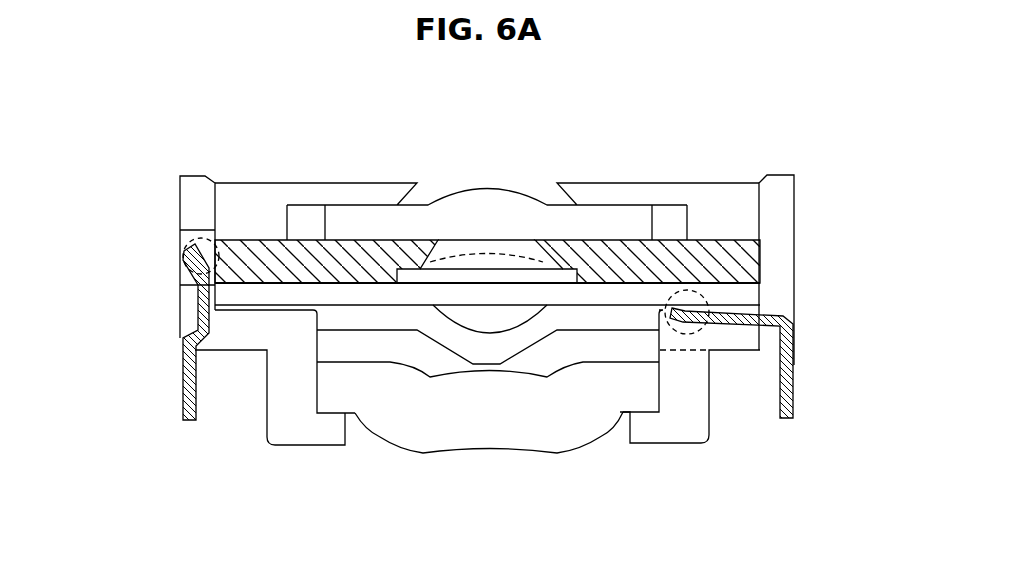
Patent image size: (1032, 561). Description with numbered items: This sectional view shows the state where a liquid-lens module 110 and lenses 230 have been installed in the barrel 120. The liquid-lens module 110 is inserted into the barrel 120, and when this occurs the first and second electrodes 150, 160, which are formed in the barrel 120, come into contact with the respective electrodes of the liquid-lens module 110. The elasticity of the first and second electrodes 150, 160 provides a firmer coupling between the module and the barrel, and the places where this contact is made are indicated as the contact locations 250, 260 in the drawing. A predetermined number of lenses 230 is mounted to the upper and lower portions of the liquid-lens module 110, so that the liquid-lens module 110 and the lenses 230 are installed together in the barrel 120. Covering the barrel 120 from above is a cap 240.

The liquid-lens module 110 is at (647, 298).
The barrel 120 is at (784, 238).
The first electrode 150 is at (187, 302).
The second electrode 160 is at (797, 372).
The lenses 230 is at (360, 222).
The cap 240 is at (275, 193).
The contact location 250 is at (195, 245).
The contact location 260 is at (705, 297).